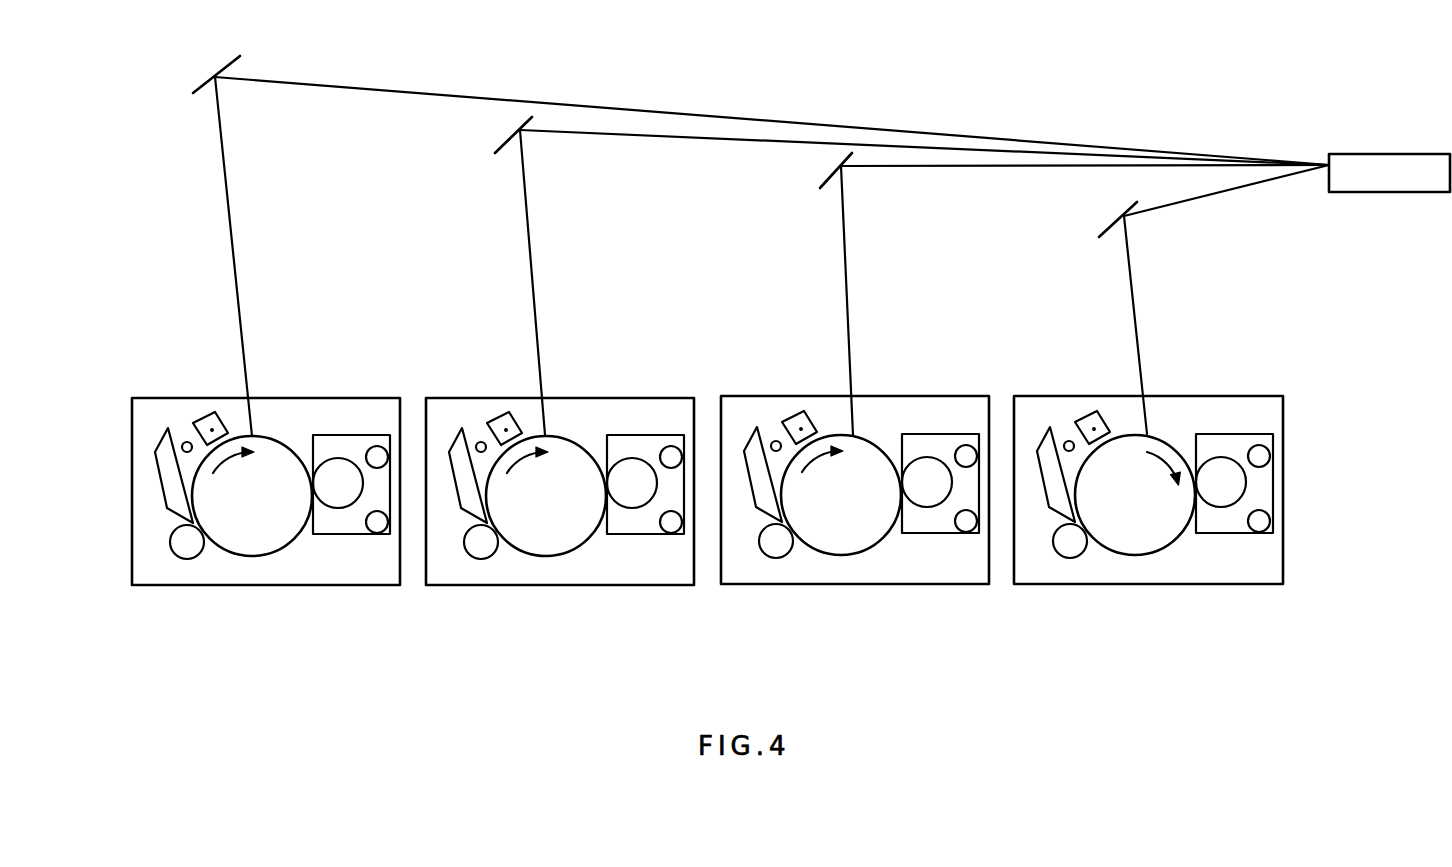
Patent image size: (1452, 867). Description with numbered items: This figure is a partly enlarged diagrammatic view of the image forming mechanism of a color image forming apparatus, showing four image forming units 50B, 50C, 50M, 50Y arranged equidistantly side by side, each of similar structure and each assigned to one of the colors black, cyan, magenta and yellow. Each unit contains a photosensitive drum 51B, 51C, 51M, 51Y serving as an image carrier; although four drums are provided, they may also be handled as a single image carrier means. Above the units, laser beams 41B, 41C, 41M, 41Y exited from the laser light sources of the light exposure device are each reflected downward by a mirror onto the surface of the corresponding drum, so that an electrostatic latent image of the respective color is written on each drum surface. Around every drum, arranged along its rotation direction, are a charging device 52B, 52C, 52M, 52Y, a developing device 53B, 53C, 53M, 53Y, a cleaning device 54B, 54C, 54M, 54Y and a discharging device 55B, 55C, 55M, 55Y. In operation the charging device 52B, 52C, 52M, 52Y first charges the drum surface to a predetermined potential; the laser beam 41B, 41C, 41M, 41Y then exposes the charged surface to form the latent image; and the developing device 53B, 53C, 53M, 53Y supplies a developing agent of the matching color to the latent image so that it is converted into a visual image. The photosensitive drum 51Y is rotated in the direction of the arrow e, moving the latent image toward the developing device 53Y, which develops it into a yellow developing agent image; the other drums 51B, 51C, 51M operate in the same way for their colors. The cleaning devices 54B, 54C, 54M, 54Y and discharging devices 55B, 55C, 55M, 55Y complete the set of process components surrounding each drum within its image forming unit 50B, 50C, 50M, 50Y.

The laser beam 41B is at (230, 215).
The laser beam 41C is at (529, 213).
The laser beam 41M is at (843, 215).
The laser beam 41Y is at (1128, 257).
The image forming unit 50B is at (290, 588).
The image forming unit 50C is at (584, 588).
The image forming unit 50M is at (879, 588).
The image forming unit 50Y is at (1168, 588).
The photosensitive drum 51B is at (252, 496).
The photosensitive drum 51C is at (546, 496).
The photosensitive drum 51M is at (841, 495).
The photosensitive drum 51Y is at (1135, 495).
The charging device 52B is at (211, 408).
The charging device 52C is at (505, 408).
The charging device 52M is at (810, 408).
The charging device 52Y is at (1103, 408).
The developing device 53B is at (342, 525).
The developing device 53C is at (636, 525).
The developing device 53M is at (931, 525).
The developing device 53Y is at (1225, 525).
The cleaning device 54B is at (175, 568).
The cleaning device 54C is at (469, 568).
The cleaning device 54M is at (764, 567).
The cleaning device 54Y is at (1058, 567).
The discharging device 55B is at (183, 442).
The discharging device 55C is at (477, 442).
The discharging device 55M is at (769, 441).
The discharging device 55Y is at (1062, 441).